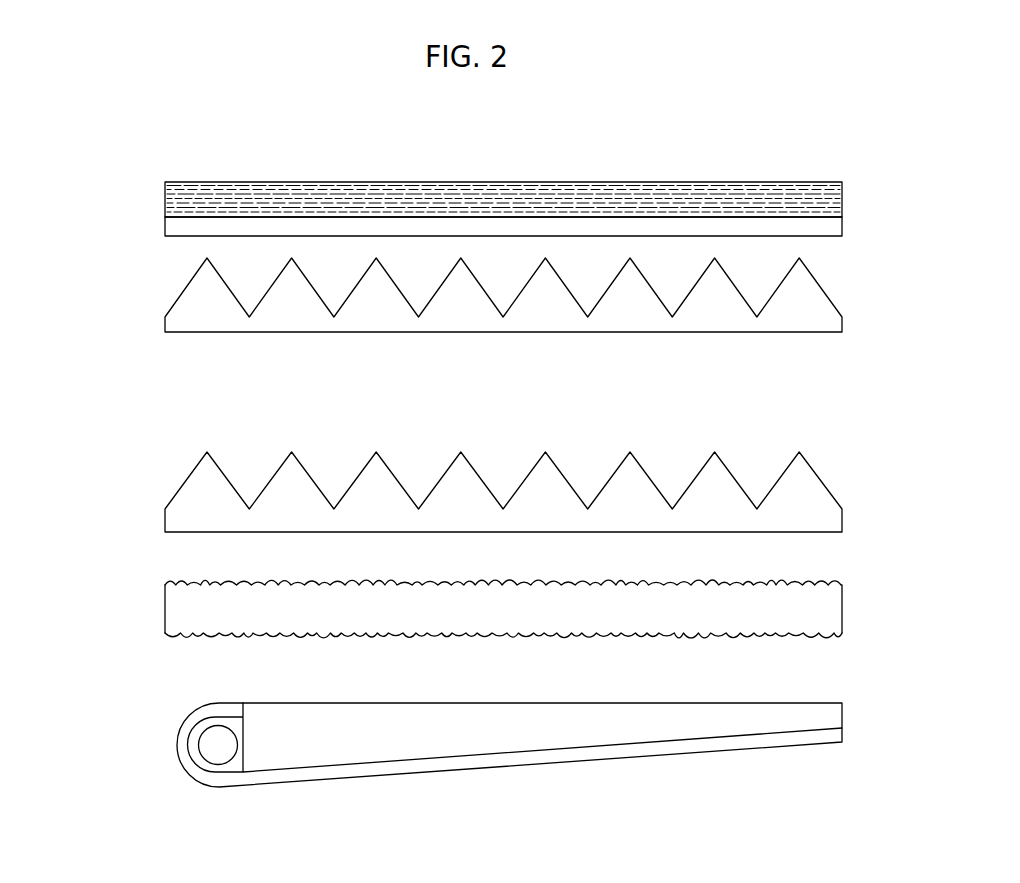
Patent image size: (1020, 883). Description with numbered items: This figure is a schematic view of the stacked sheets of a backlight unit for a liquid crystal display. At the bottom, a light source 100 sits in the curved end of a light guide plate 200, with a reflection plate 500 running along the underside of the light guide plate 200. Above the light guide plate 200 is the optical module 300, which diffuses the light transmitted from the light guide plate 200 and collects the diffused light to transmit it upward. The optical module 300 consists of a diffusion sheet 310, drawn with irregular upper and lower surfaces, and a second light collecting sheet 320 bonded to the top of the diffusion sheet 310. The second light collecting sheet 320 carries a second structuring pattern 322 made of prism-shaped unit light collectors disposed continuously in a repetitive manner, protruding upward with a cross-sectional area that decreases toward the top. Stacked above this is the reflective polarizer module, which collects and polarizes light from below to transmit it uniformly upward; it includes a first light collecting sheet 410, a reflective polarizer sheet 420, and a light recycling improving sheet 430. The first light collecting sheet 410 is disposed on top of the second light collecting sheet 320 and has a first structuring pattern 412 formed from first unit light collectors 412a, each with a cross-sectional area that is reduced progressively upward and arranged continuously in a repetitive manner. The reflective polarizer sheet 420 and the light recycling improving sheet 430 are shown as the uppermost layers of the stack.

The light source 100 is at (215, 743).
The light guide plate 200 is at (325, 752).
The optical module 300 is at (464, 545).
The diffusion sheet 310 is at (455, 609).
The second light collecting sheet 320 is at (494, 492).
The second structuring pattern 322 is at (807, 510).
The first light collecting sheet 410 is at (496, 355).
The first structuring pattern 412 is at (544, 355).
The first unit light collector 412a is at (207, 287).
The reflective polarizer sheet 420 is at (827, 200).
The light recycling improving sheet 430 is at (827, 228).
The reflection plate 500 is at (572, 755).